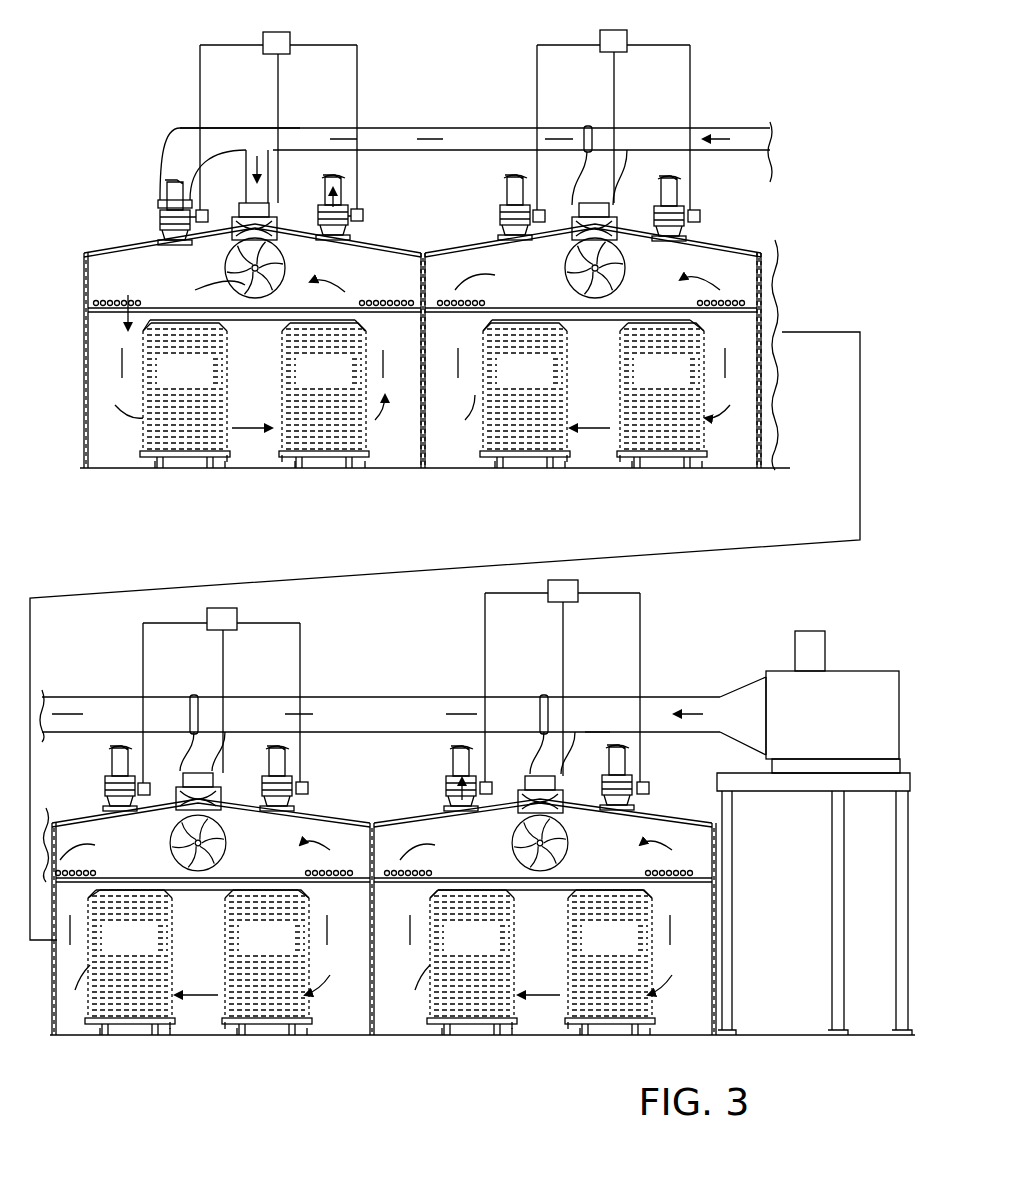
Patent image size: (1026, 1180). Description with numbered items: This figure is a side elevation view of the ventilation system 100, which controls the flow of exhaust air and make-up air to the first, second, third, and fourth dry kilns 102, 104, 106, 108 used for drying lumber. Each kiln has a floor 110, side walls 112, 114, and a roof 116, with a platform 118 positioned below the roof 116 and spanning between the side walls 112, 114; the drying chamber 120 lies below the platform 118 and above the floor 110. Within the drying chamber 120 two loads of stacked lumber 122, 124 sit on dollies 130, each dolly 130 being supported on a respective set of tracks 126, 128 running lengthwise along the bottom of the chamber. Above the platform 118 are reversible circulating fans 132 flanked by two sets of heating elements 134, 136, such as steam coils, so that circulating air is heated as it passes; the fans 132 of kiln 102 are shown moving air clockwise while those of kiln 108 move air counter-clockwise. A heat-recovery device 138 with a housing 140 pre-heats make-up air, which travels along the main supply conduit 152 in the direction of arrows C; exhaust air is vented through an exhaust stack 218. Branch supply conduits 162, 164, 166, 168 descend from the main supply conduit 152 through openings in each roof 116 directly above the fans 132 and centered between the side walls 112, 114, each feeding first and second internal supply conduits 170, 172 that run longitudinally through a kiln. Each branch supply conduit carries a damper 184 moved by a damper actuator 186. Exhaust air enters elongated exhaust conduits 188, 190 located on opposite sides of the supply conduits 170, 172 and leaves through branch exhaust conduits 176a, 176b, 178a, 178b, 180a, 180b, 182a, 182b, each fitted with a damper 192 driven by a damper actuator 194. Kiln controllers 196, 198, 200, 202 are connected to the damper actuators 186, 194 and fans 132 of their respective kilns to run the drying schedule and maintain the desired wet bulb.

The ventilation system 100 is at (470, 90).
The first dry kiln 102 is at (548, 1050).
The second dry kiln 104 is at (193, 1052).
The third dry kiln 106 is at (600, 484).
The fourth dry kiln 108 is at (382, 480).
The floor 110 is at (110, 467).
The side wall 112 is at (86, 392).
The side wall 114 is at (412, 423).
The roof 116 is at (112, 250).
The platform 118 is at (207, 306).
The drying chamber 120 is at (84, 302).
The load of stacked lumber 122 is at (164, 392).
The load of stacked lumber 124 is at (303, 396).
The tracks 126 is at (217, 468).
The tracks 128 is at (293, 468).
The dolly 130 is at (279, 460).
The circulating fans 132 is at (270, 296).
The heating elements 134 is at (100, 300).
The heating elements 136 is at (407, 253).
The heat-recovery device 138 is at (821, 803).
The housing 140 is at (890, 703).
The main supply conduit 152 is at (380, 697).
The branch supply conduit 162 is at (551, 730).
The branch supply conduit 164 is at (203, 713).
The branch supply conduit 166 is at (597, 177).
The branch supply conduit 168 is at (231, 126).
The first internal supply conduit 170 is at (207, 193).
The second internal supply conduit 172 is at (257, 138).
The branch exhaust conduit 176a is at (617, 753).
The branch exhaust conduit 176b is at (442, 748).
The branch exhaust conduit 178a is at (280, 757).
The branch exhaust conduit 178b is at (120, 763).
The branch exhaust conduit 180a is at (682, 191).
The branch exhaust conduit 180b is at (515, 180).
The branch exhaust conduit 182a is at (328, 178).
The branch exhaust conduit 182b is at (163, 184).
The damper 184 is at (234, 128).
The damper actuator 186 is at (303, 133).
The first exhaust conduit 188 is at (330, 240).
The second exhaust conduit 190 is at (168, 243).
The damper 192 is at (165, 214).
The damper actuator 194 is at (200, 206).
The kiln controller 196 is at (578, 590).
The kiln controller 198 is at (237, 615).
The kiln controller 200 is at (627, 40).
The kiln controller 202 is at (292, 42).
The exhaust stack 218 is at (808, 643).
The arrows C is at (728, 127).